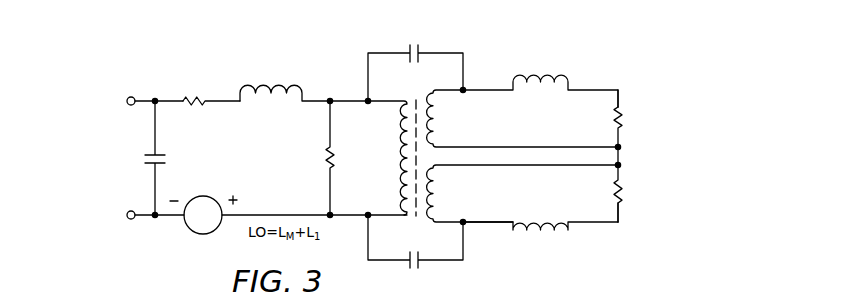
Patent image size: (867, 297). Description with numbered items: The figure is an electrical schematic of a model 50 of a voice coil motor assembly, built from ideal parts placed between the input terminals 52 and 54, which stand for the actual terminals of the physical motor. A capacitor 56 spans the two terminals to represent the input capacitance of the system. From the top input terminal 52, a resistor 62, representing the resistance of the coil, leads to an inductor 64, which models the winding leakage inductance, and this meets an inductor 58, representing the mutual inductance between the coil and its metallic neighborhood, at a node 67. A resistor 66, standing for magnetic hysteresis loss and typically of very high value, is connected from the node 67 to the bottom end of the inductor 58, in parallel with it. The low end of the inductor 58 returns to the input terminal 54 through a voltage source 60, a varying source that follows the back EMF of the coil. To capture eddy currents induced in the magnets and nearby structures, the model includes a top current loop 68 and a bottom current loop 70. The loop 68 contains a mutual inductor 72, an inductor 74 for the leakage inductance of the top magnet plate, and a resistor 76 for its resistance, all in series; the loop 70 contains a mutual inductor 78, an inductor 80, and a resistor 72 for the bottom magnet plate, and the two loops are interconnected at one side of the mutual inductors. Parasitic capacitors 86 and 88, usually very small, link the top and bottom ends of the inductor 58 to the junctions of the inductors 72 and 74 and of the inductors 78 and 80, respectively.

The model 50 is at (724, 52).
The input terminal 52 is at (127, 100).
The input terminal 54 is at (127, 216).
The capacitor 56 is at (146, 158).
The inductor 58 is at (398, 180).
The voltage source 60 is at (187, 225).
The resistor 62 is at (190, 97).
The inductor 64 is at (248, 87).
The resistor 66 is at (326, 148).
The node 67 is at (330, 97).
The current loop 68 is at (634, 96).
The current loop 70 is at (634, 217).
The mutual inductor 72 is at (426, 95).
The inductor 74 is at (546, 72).
The resistor 76 is at (622, 118).
The mutual inductor 78 is at (426, 218).
The inductor 80 is at (546, 239).
The parasitic capacitor 86 is at (408, 47).
The parasitic capacitor 88 is at (426, 268).